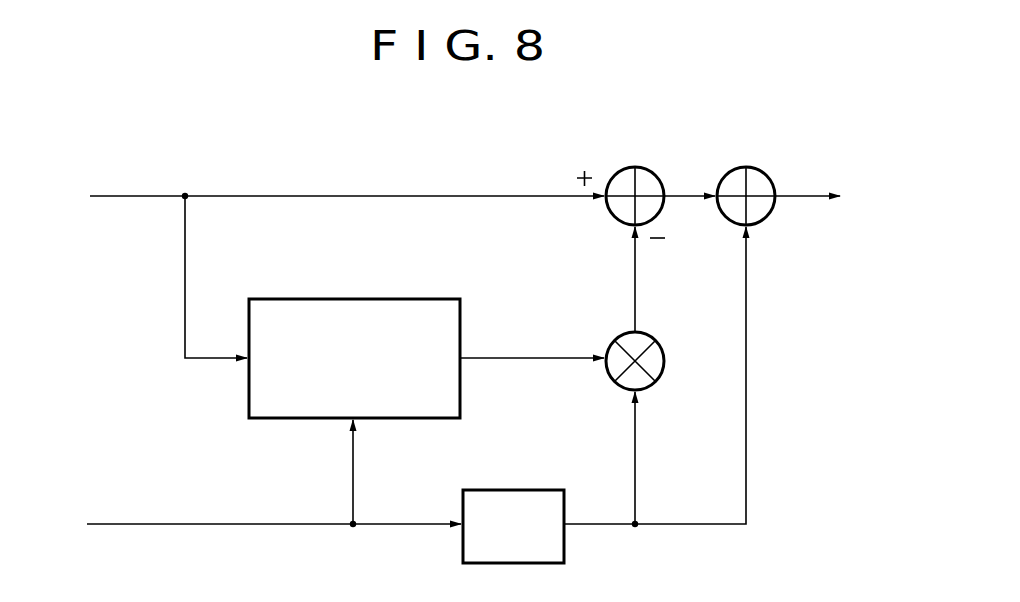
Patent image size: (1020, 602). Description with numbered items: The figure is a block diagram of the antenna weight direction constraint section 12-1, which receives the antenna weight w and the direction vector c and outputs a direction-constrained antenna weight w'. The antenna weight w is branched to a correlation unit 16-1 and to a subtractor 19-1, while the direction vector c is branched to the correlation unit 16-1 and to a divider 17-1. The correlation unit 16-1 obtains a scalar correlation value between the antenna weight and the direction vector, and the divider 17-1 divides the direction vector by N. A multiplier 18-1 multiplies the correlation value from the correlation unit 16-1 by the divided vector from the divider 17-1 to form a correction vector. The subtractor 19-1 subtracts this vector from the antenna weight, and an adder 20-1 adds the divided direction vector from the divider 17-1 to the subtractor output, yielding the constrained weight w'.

The antenna weight direction constraint section 12-1 is at (451, 166).
The correlation unit 16-1 is at (315, 299).
The divider 17-1 is at (480, 490).
The multiplier 18-1 is at (655, 338).
The subtractor 19-1 is at (637, 168).
The adder 20-1 is at (748, 168).